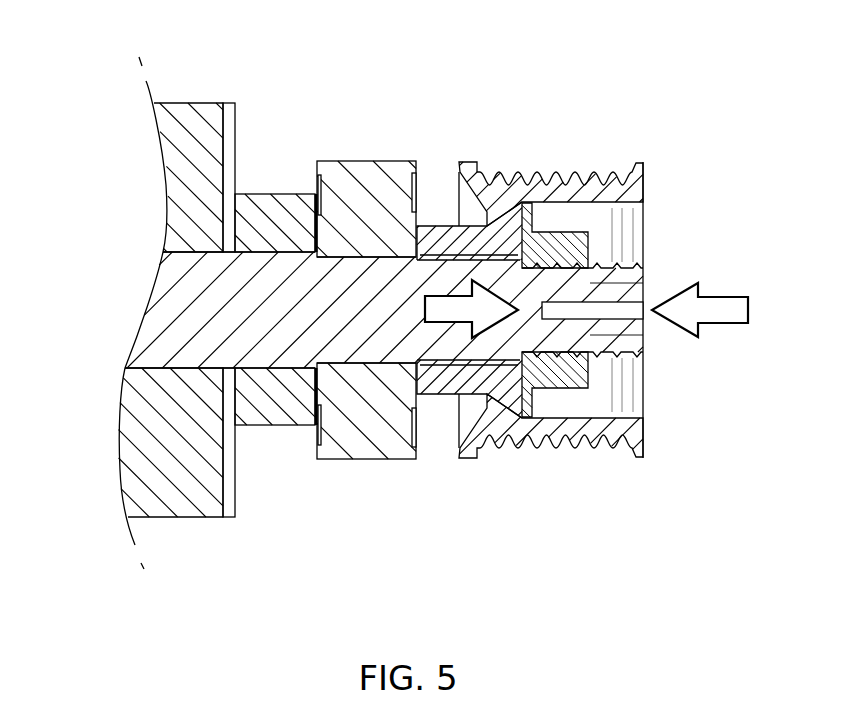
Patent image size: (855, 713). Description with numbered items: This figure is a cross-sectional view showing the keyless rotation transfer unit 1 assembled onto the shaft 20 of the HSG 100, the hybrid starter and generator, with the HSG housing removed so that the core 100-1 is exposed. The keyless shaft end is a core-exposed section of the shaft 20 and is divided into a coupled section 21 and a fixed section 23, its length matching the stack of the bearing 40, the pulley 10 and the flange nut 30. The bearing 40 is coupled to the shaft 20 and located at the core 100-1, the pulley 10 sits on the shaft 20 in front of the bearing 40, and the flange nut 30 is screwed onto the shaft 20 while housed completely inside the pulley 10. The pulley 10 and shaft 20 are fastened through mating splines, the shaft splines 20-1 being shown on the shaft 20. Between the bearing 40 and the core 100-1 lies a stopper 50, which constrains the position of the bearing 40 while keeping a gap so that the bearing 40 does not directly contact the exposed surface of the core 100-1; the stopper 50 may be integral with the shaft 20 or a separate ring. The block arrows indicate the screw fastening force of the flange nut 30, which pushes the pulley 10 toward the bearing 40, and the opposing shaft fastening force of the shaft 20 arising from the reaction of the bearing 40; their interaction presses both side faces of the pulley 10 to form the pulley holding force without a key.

The keyless rotation transfer unit 1 is at (612, 118).
The pulley 10 is at (580, 452).
The shaft 20 is at (170, 327).
The shaft splines 20-1 is at (443, 262).
The coupled section 21 is at (386, 268).
The fixed section 23 is at (620, 283).
The flange nut 30 is at (597, 250).
The bearing 40 is at (377, 443).
The stopper 50 is at (268, 402).
The HSG 100 is at (193, 182).
The core 100-1 is at (235, 125).